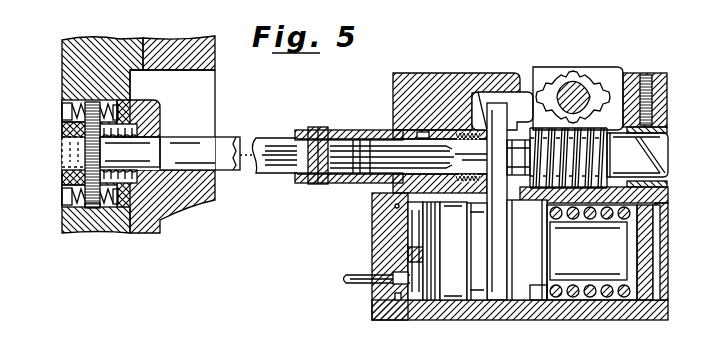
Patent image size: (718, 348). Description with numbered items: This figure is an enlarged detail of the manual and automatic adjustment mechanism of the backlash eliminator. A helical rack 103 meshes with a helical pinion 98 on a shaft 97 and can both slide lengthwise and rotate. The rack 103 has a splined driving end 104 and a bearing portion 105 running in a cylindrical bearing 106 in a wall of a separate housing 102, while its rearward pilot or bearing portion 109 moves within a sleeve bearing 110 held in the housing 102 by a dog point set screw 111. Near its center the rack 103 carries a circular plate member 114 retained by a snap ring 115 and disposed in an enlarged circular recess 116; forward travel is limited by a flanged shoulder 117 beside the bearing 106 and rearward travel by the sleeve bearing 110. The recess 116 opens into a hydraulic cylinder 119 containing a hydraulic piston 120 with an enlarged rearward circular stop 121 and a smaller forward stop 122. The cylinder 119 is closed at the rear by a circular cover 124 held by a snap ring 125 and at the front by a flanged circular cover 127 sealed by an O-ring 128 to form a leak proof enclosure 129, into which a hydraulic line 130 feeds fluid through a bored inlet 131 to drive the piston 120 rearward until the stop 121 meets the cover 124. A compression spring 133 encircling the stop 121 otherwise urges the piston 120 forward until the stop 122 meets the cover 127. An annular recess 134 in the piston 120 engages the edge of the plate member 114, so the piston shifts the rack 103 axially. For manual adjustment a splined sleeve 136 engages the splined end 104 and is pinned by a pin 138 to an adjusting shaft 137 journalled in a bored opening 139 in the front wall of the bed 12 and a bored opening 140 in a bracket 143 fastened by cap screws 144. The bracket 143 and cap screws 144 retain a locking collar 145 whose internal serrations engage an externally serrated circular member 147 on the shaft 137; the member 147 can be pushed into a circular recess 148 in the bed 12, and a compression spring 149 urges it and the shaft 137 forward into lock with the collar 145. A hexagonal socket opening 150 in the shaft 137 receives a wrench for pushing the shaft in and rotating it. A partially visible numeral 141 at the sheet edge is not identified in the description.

The bed 12 is at (72, 51).
The shaft 97 is at (569, 83).
The helical pinion 98 is at (587, 78).
The housing 102 is at (407, 84).
The helical rack 103 is at (593, 151).
The splined driving end 104 is at (382, 143).
The bearing portion 105 is at (460, 137).
The cylindrical bearing 106 is at (451, 144).
The pilot or bearing portion 109 is at (652, 171).
The sleeve bearing 110 is at (625, 80).
The dog point set screw 111 is at (648, 77).
The circular plate member 114 is at (498, 199).
The snap ring 115 is at (489, 125).
The enlarged circular recess 116 is at (482, 98).
The flanged shoulder 117 is at (492, 150).
The hydraulic cylinder 119 is at (453, 208).
The hydraulic piston 120 is at (535, 293).
The rearward circular stop 121 is at (566, 240).
The forward stop 122 is at (416, 251).
The circular plate or cover 124 is at (652, 298).
The snap ring 125 is at (665, 296).
The flanged circular cover 127 is at (372, 298).
The O-ring 128 is at (373, 207).
The leak proof enclosure 129 is at (414, 223).
The hydraulic line 130 is at (342, 279).
The bored inlet 131 is at (372, 266).
The compression spring 133 is at (621, 298).
The annular recess 134 is at (480, 300).
The splined sleeve 136 is at (337, 133).
The adjusting shaft 137 is at (259, 147).
The pin 138 is at (308, 126).
The bored opening 139 is at (155, 140).
The bored opening 140 is at (72, 135).
The element 141 is at (402, 346).
The bracket 143 is at (62, 177).
The cap screws 144 is at (67, 110).
The locking collar 145 is at (93, 208).
The circular member 147 is at (100, 147).
The circular recess 148 is at (147, 120).
The compression spring 149 is at (147, 180).
The hexagonal socket opening 150 is at (58, 151).